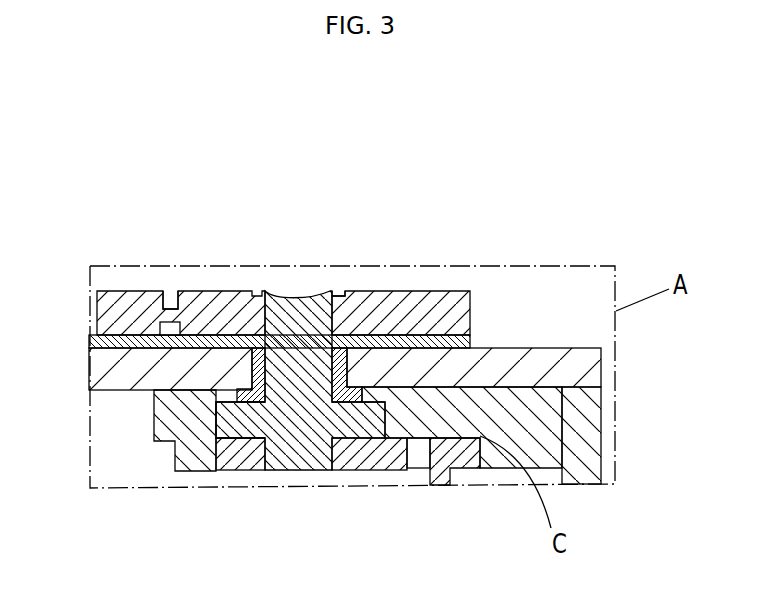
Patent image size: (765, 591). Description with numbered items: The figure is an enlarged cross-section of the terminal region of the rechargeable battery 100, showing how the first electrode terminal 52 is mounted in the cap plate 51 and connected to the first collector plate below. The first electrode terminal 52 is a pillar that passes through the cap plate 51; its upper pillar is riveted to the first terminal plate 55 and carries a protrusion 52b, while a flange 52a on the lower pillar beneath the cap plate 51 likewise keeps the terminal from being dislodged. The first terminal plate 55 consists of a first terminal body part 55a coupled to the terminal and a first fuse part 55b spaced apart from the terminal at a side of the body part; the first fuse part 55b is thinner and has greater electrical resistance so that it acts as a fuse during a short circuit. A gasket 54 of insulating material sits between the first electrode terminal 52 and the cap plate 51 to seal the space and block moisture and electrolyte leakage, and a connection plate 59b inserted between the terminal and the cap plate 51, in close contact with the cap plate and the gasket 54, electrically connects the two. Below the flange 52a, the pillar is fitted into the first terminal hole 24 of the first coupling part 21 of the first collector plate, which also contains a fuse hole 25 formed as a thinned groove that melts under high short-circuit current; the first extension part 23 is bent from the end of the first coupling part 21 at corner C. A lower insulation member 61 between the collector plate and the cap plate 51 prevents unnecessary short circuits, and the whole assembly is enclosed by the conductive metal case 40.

The rechargeable battery 100 is at (70, 188).
The first terminal plate 55 is at (283, 244).
The first terminal body part 55a is at (212, 291).
The first fuse part 55b is at (170, 291).
The connection plate 59b is at (470, 340).
The cap plate 51 is at (100, 372).
The first electrode terminal 52 is at (271, 374).
The flange 52a is at (227, 423).
The protrusion 52b is at (340, 291).
The gasket 54 is at (347, 382).
The first terminal hole 24 is at (253, 470).
The first coupling part 21 is at (373, 470).
The fuse hole 25 is at (418, 470).
The first extension part 23 is at (465, 470).
The lower insulation member 61 is at (560, 413).
The case 40 is at (602, 433).